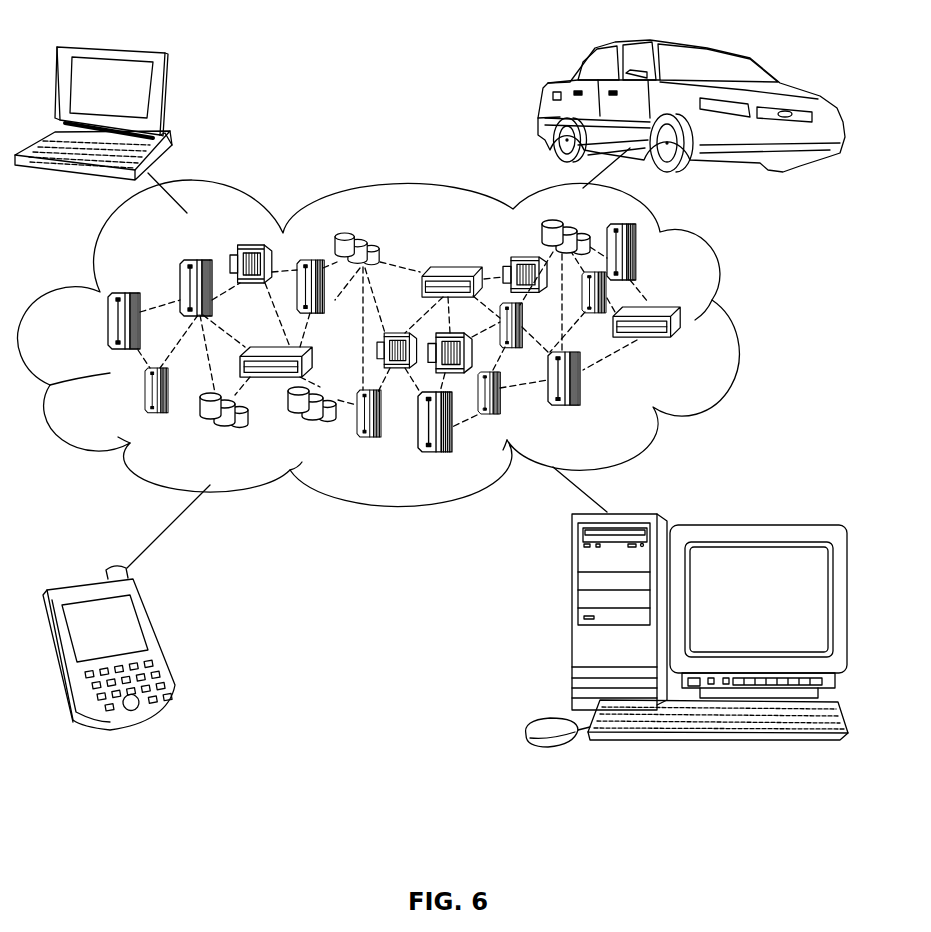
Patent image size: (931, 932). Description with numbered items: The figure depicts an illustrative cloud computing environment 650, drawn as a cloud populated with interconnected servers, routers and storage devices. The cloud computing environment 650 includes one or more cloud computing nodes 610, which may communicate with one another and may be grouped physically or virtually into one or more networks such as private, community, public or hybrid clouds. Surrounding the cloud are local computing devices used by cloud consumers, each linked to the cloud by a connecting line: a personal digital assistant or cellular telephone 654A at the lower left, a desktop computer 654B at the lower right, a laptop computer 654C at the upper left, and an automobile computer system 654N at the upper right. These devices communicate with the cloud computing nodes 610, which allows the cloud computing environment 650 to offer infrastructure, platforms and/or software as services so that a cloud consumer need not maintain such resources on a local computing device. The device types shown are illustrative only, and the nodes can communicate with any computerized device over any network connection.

The cloud computing environment 650 is at (723, 284).
The cloud computing nodes 610 is at (700, 342).
The personal digital assistant (PDA) or cellular telephone 654A is at (157, 640).
The desktop computer 654B is at (572, 620).
The laptop computer 654C is at (167, 93).
The automobile computer system 654N is at (550, 95).